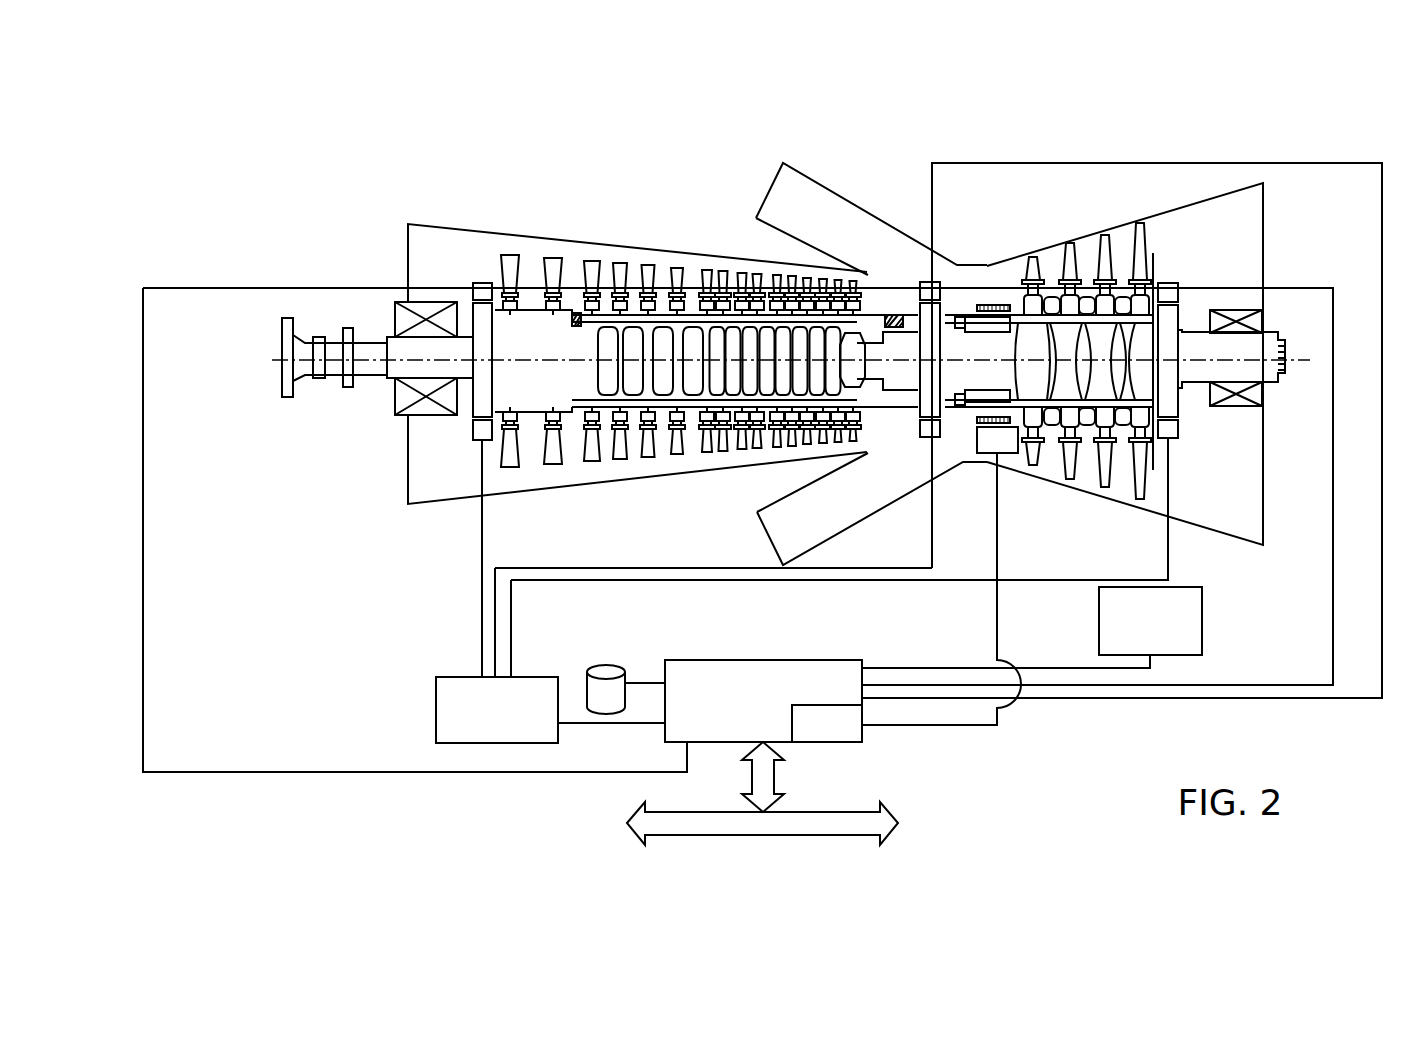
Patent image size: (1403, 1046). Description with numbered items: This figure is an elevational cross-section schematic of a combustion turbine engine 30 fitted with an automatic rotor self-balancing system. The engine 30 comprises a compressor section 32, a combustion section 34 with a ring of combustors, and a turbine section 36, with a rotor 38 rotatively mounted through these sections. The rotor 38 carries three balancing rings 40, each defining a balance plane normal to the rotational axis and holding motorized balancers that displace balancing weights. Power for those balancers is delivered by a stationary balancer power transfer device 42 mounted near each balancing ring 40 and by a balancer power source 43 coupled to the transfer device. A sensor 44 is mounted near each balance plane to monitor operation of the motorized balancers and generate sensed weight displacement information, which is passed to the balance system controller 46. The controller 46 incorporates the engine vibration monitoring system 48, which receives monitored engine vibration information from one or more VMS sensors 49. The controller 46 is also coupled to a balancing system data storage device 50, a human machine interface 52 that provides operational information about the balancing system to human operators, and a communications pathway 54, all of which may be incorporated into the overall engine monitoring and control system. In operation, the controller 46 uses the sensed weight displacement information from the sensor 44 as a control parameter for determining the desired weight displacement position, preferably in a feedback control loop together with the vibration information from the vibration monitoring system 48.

The combustion turbine engine 30 is at (1268, 93).
The compressor section 32 is at (565, 497).
The combustion section 34 is at (905, 535).
The turbine section 36 is at (1087, 207).
The rotor 38 is at (248, 343).
The balancing ring 40 is at (478, 323).
The balancer power transfer device 42 is at (478, 428).
The balancer power source 43 is at (436, 714).
The sensor 44 is at (483, 290).
The balance system controller 46 is at (679, 668).
The vibration monitoring system 48 is at (858, 742).
The VMS sensor 49 is at (1002, 450).
The balancing system data storage device 50 is at (603, 670).
The human machine interface 52 is at (1202, 620).
The communications pathway 54 is at (627, 823).